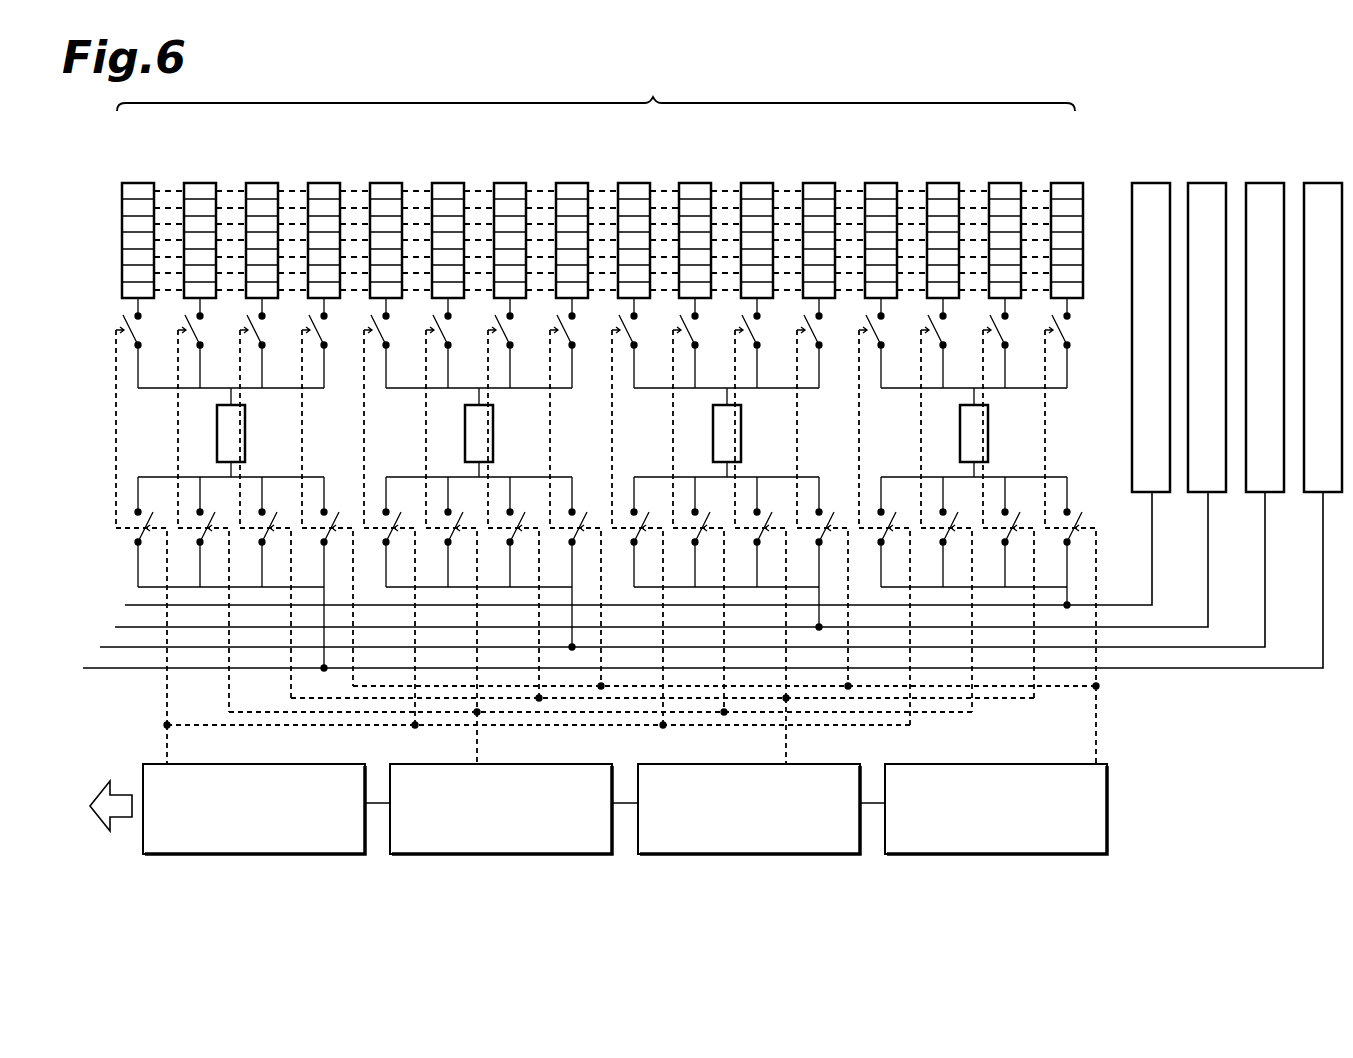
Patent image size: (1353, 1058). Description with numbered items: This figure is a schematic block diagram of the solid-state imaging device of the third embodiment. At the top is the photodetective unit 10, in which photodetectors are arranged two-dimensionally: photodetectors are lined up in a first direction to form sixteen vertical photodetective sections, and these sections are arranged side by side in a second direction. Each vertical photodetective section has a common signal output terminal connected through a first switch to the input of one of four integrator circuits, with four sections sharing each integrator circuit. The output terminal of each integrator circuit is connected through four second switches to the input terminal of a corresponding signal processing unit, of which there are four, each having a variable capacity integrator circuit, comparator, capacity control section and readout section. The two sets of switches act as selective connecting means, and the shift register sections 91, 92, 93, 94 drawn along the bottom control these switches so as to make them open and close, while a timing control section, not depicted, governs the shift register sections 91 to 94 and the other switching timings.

The photodetective unit 10 is at (596, 90).
The shift register section 91 is at (992, 854).
The shift register section 92 is at (745, 854).
The shift register section 93 is at (497, 854).
The shift register section 94 is at (249, 854).